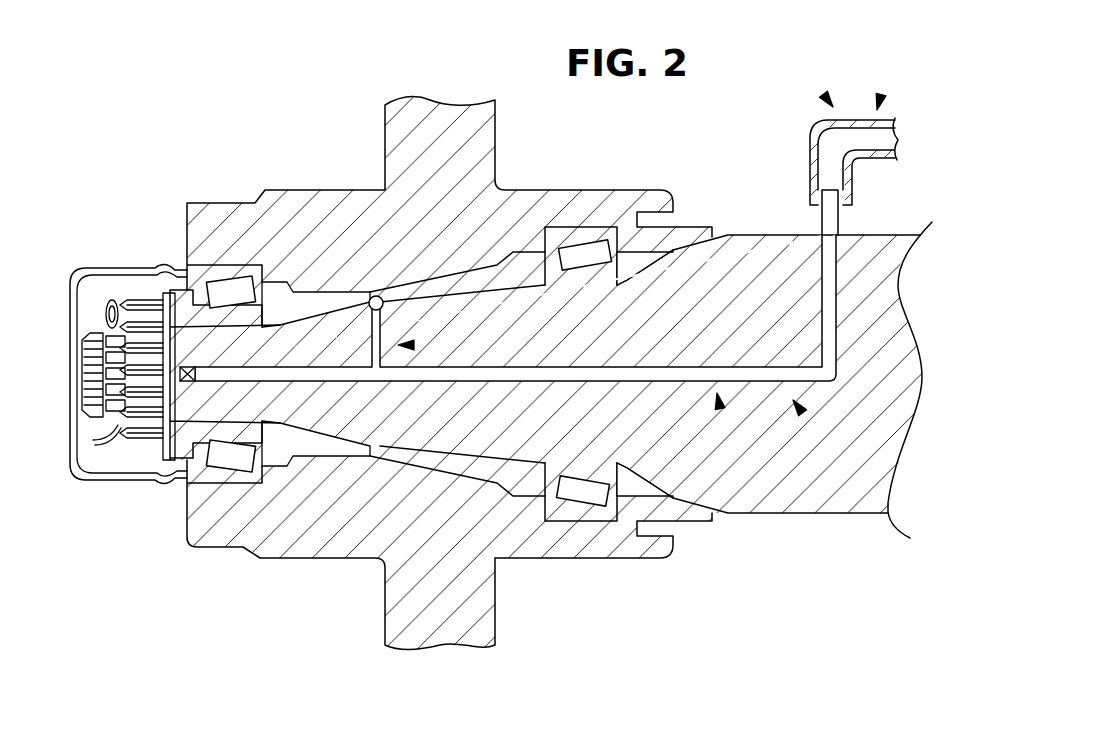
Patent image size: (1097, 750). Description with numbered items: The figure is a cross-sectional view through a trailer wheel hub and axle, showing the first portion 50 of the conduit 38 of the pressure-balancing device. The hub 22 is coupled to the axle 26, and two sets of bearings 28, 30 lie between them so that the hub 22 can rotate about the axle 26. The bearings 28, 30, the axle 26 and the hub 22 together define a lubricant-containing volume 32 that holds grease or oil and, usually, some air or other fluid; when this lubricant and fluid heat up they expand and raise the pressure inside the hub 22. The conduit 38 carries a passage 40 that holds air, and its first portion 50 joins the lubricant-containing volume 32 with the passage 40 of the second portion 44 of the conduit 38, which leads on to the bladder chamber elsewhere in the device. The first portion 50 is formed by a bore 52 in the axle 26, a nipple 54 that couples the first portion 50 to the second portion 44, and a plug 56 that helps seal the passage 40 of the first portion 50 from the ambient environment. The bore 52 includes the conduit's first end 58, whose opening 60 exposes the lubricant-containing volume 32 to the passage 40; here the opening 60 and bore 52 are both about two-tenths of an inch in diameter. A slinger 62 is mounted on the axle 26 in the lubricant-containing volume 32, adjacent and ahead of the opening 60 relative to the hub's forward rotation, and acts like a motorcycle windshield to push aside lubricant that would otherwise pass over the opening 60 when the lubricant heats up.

The hub 22 is at (387, 140).
The axle 26 is at (553, 345).
The bearings 28 is at (583, 373).
The bearings 30 is at (230, 374).
The lubricant-containing volume 32 is at (490, 274).
The conduit 38 is at (823, 94).
The passage 40 is at (828, 150).
The second portion 44 is at (881, 94).
The first portion 50 is at (720, 409).
The bore 52 is at (822, 307).
The nipple 54 is at (820, 228).
The plug 56 is at (178, 380).
The first end 58 is at (414, 345).
The opening 60 is at (385, 306).
The slinger 62 is at (372, 290).